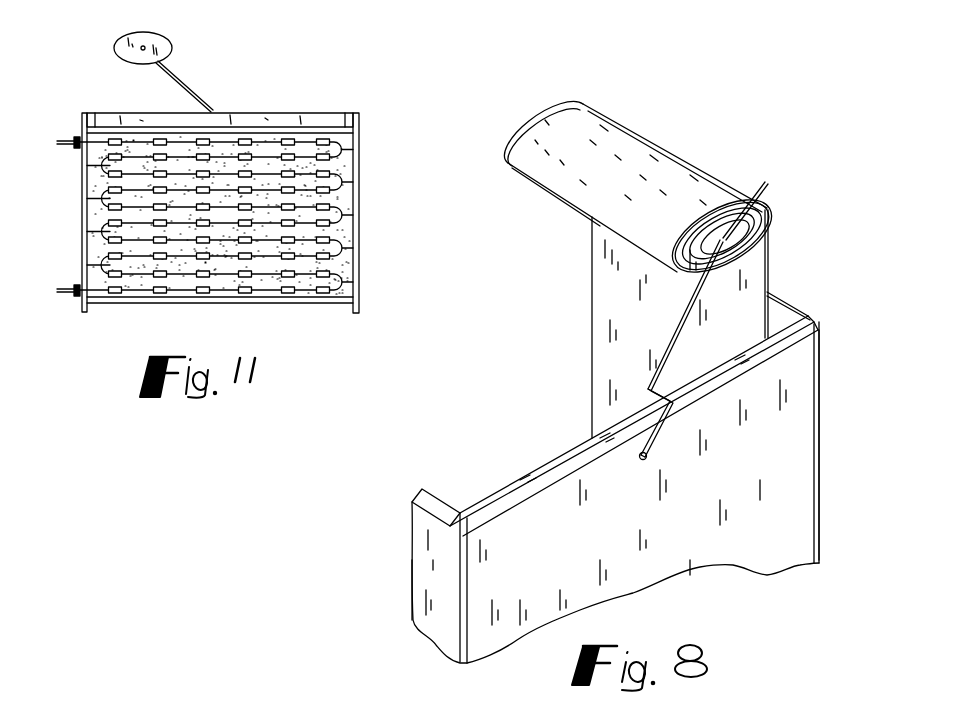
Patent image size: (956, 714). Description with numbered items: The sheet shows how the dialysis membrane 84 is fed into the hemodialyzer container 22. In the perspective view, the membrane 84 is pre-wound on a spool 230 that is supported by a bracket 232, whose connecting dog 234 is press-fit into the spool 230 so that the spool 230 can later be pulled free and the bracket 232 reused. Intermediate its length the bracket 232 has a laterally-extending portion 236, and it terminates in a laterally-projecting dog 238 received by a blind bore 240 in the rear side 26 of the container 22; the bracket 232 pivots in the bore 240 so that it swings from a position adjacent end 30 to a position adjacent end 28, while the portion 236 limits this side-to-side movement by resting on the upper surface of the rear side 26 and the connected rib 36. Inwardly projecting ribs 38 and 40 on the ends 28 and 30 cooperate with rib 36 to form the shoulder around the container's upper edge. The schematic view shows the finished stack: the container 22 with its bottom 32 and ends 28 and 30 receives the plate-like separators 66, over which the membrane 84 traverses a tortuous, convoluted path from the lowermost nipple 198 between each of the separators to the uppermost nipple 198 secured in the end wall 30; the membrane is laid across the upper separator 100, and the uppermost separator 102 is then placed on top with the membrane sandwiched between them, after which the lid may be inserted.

In FIG. 8, the container 22 is at (826, 462).
In FIG. 8, the rear side 26 is at (623, 577).
In FIG. 11, the end 28 is at (357, 248).
In FIG. 8, the end 28 is at (436, 611).
In FIG. 11, the end 30 is at (82, 244).
In FIG. 8, the end 30 is at (814, 318).
In FIG. 11, the bottom 32 is at (252, 307).
In FIG. 8, the rib 36 is at (521, 476).
In FIG. 8, the rib 38 is at (442, 497).
In FIG. 8, the rib 40 is at (788, 306).
In FIG. 11, the separator 66 is at (336, 163).
In FIG. 8, the membrane 84 is at (592, 272).
In FIG. 11, the separator 100 is at (102, 153).
In FIG. 11, the separator 102 is at (337, 142).
In FIG. 11, the nipple 198 is at (72, 138).
In FIG. 11, the spool 230 is at (161, 46).
In FIG. 8, the spool 230 is at (748, 232).
In FIG. 11, the bracket 232 is at (186, 80).
In FIG. 8, the bracket 232 is at (690, 296).
In FIG. 8, the connecting dog 234 is at (778, 170).
In FIG. 8, the laterally-extending portion 236 is at (690, 406).
In FIG. 8, the laterally-projecting dog 238 is at (647, 462).
In FIG. 8, the blind bore 240 is at (641, 447).